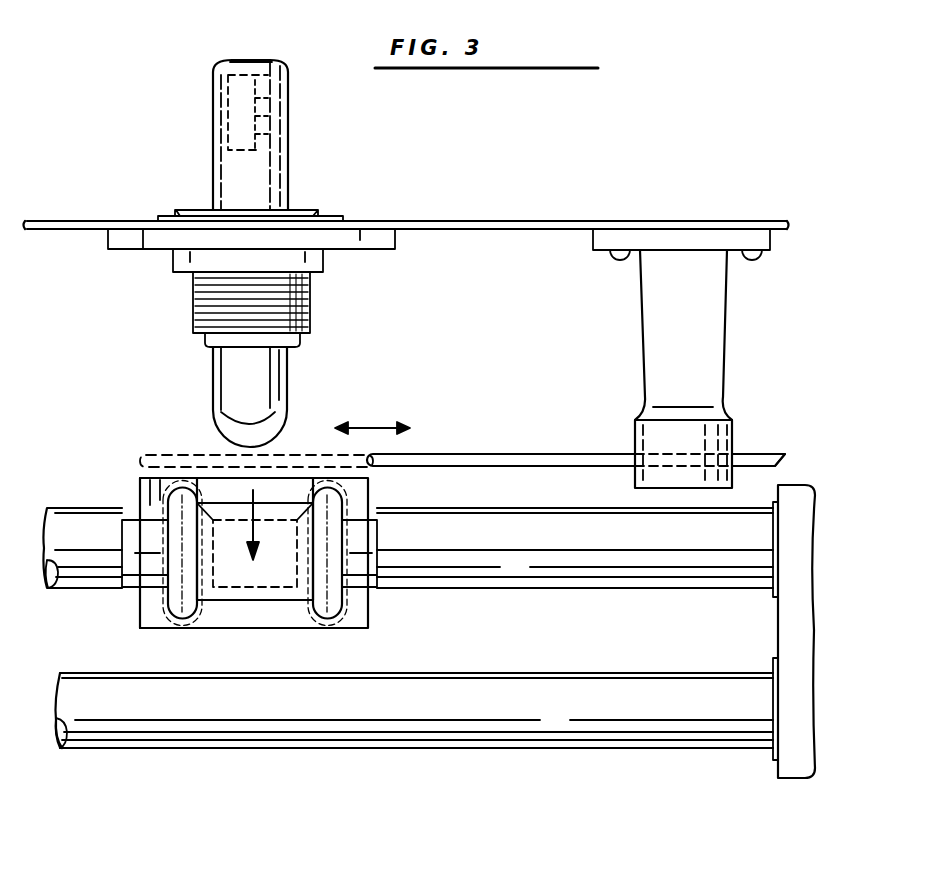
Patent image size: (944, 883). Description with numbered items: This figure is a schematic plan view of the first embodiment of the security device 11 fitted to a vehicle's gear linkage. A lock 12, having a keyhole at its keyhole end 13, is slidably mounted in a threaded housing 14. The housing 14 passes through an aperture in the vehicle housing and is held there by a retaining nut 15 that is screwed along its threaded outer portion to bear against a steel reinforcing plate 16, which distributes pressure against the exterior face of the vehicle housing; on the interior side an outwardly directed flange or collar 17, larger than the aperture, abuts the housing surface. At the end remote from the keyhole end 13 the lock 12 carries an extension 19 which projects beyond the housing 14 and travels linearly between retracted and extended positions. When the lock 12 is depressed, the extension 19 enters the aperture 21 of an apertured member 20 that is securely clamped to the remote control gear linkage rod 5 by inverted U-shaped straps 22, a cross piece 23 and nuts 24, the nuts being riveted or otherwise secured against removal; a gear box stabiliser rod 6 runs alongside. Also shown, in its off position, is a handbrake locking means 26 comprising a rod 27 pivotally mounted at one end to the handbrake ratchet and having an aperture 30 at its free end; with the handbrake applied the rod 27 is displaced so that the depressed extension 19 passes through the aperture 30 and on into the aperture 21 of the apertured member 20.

The solenoid assembly 11 is at (478, 163).
The lock 12 is at (193, 183).
The keyhole end 13 is at (235, 60).
The housing 14 is at (300, 323).
The retaining nut 15 is at (187, 258).
The steel reinforcing plate 16 is at (358, 238).
The flange or collar 17 is at (298, 210).
The extension 19 is at (270, 388).
The apertured member 20 is at (247, 600).
The aperture 21 is at (277, 600).
The inverted U-shaped straps 22 is at (170, 535).
The cross piece 23 is at (147, 498).
The nuts 24 is at (143, 622).
The handbrake locking means 26 is at (590, 461).
The rod 27 is at (185, 450).
The aperture 30 is at (455, 452).
The remote control gear linkage rod 5 is at (60, 512).
The gear box stabiliser rod 6 is at (176, 728).